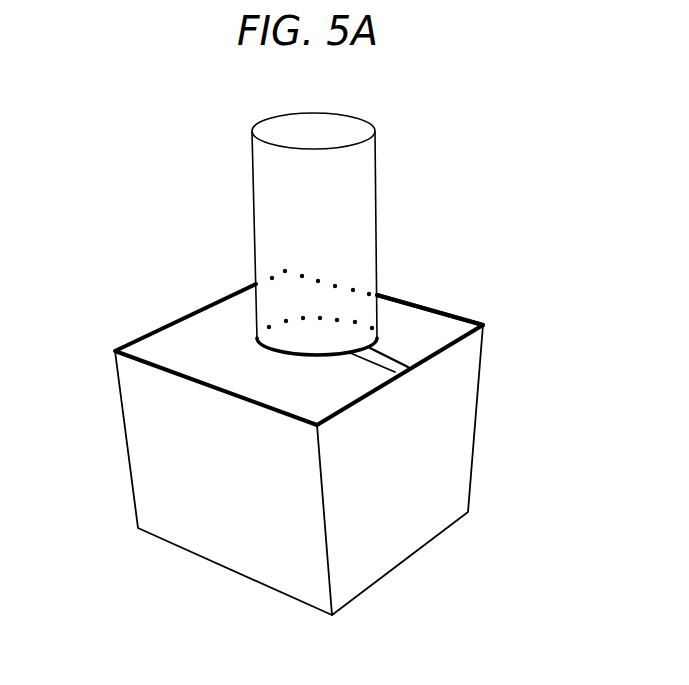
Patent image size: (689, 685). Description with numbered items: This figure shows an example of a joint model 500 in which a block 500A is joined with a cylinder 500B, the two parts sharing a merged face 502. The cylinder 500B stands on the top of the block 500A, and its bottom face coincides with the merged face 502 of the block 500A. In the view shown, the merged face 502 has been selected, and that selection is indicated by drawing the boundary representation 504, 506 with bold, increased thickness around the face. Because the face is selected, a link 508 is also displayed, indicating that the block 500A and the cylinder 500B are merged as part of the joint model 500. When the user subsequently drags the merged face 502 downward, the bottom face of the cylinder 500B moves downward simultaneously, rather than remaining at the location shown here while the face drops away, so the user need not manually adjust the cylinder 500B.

The joint model 500 is at (516, 190).
The block 500A is at (435, 432).
The cylinder 500B is at (353, 200).
The merged face 502 is at (208, 343).
The boundary representation 504 is at (460, 316).
The boundary representation 506 is at (395, 372).
The link 508 is at (408, 367).